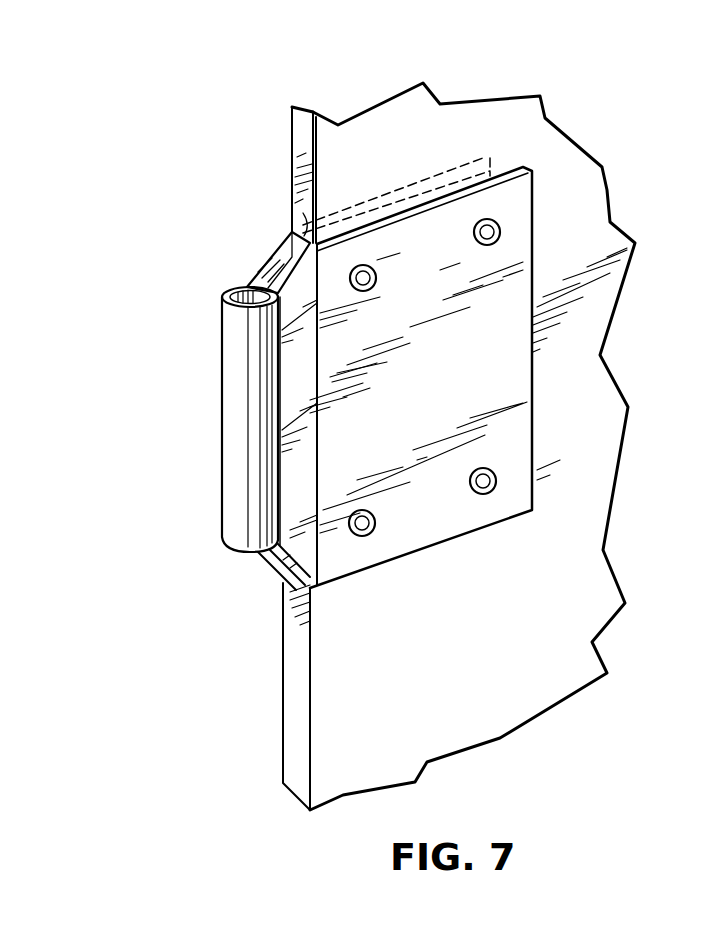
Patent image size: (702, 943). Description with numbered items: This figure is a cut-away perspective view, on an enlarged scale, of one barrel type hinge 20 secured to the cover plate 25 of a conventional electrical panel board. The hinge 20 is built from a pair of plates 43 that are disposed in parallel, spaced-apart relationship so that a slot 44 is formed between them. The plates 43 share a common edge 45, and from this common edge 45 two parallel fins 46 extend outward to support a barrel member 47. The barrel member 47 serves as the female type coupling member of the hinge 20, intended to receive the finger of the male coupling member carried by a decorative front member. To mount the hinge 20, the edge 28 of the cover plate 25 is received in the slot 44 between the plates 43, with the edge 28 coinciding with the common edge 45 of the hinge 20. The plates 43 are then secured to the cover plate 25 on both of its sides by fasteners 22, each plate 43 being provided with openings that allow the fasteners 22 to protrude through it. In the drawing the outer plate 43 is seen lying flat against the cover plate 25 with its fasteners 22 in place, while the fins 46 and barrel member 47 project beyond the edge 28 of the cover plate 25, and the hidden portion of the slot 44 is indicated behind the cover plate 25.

The barrel type hinge 20 is at (394, 357).
The fasteners 22 is at (377, 281).
The cover plate 25 is at (507, 127).
The edge of the cover plate 28 is at (303, 155).
The plates 43 is at (383, 195).
The slot 44 is at (427, 193).
The common edge 45 is at (295, 226).
The fins 46 is at (278, 267).
The barrel member 47 is at (240, 374).